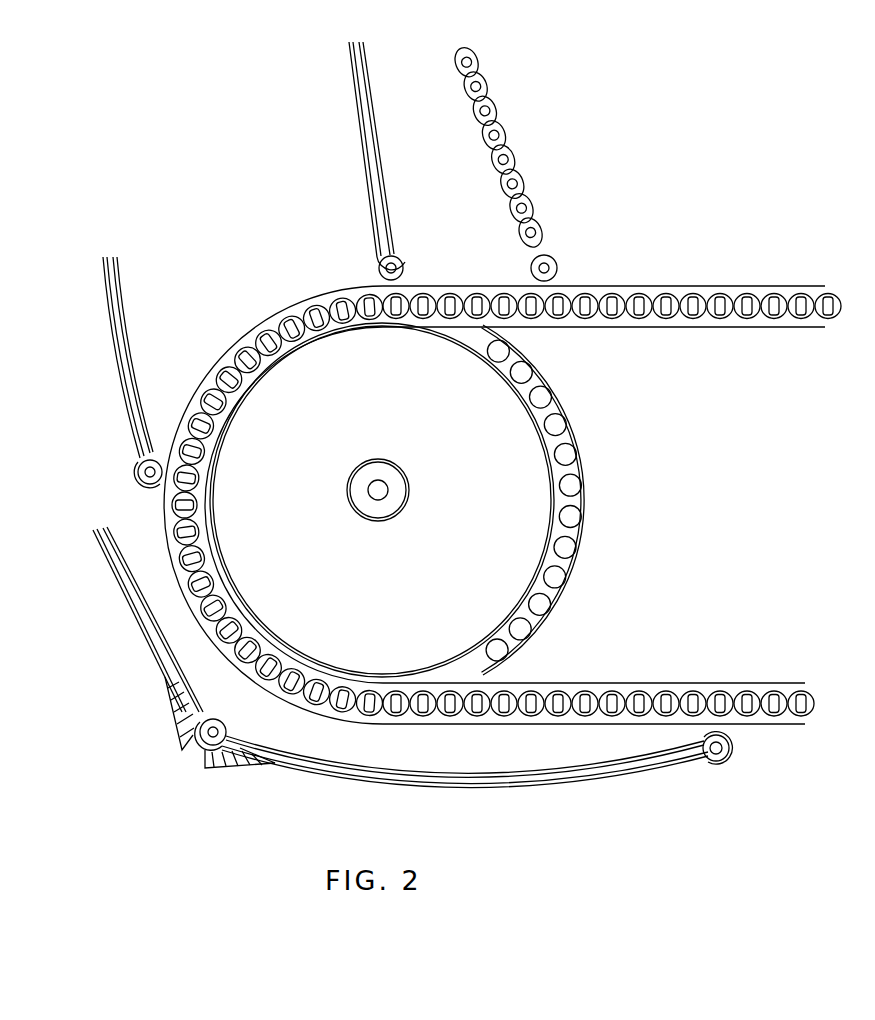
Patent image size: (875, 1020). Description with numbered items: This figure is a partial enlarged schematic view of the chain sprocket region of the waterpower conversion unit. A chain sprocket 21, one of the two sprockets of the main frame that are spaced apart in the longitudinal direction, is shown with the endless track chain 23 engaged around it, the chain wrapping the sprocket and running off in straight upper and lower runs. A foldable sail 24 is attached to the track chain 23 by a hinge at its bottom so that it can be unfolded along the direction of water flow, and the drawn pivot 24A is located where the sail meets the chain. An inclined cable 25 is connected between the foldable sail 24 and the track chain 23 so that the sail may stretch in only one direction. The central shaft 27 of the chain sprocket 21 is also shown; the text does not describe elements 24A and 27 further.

The chain sprocket 21 is at (296, 392).
The track chain 23 is at (717, 687).
The foldable sail 24 is at (625, 763).
The pivot roller 24A is at (727, 727).
The inclined cable 25 is at (510, 160).
The shaft 27 is at (352, 498).